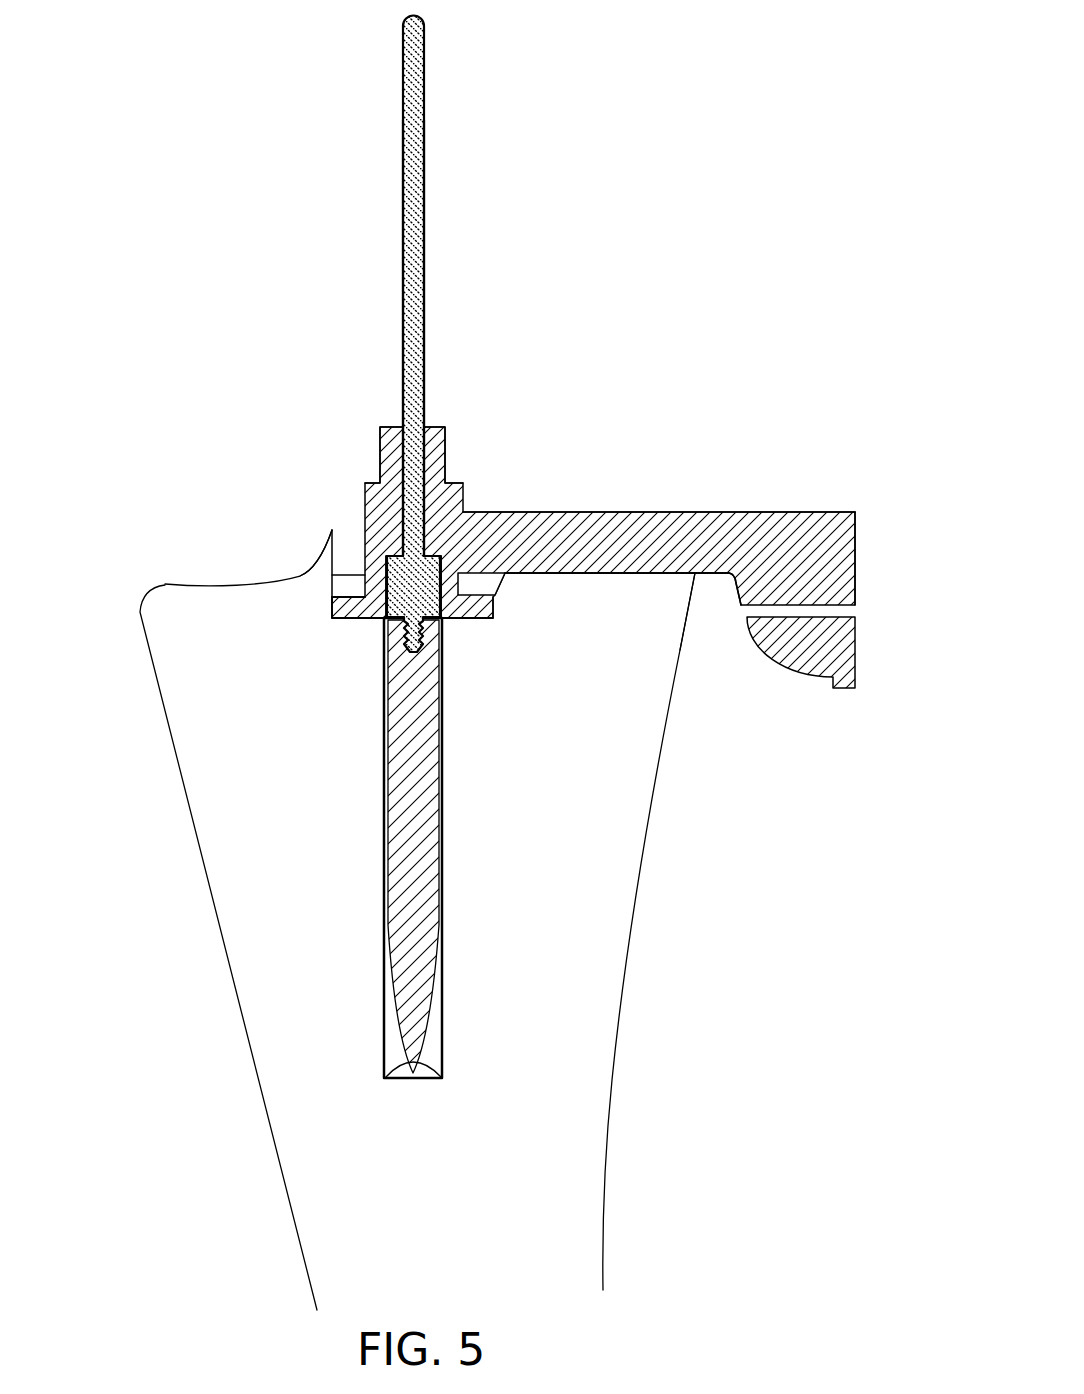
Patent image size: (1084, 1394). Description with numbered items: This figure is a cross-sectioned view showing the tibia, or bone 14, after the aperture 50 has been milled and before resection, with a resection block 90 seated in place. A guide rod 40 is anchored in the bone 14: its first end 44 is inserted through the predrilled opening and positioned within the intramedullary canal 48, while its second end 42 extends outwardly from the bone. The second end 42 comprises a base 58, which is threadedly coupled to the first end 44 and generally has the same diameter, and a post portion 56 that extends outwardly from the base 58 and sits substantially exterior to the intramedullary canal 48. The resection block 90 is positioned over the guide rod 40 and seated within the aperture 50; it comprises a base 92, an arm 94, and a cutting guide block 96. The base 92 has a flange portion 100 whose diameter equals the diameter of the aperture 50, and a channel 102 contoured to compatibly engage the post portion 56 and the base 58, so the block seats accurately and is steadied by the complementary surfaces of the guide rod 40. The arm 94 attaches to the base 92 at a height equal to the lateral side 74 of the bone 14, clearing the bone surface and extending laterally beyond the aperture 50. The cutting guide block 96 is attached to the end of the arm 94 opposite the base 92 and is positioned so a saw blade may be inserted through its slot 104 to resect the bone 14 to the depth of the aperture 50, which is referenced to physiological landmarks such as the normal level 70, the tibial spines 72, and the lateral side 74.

The bone 14 is at (617, 1046).
The guide rod 40 is at (410, 848).
The second end 42 is at (418, 88).
The first end 44 is at (415, 918).
The intramedullary canal 48 is at (443, 1040).
The aperture 50 is at (342, 585).
The post portion 56 is at (418, 292).
The base 58 is at (390, 621).
The normal level 70 is at (505, 577).
The tibial spines 72 is at (322, 542).
The lateral side 74 is at (165, 585).
The resection block 90 is at (660, 468).
The base 92 is at (452, 482).
The arm 94 is at (708, 513).
The cutting guide block 96 is at (857, 530).
The flange portion 100 is at (470, 620).
The channel 102 is at (428, 530).
The slot 104 is at (855, 612).